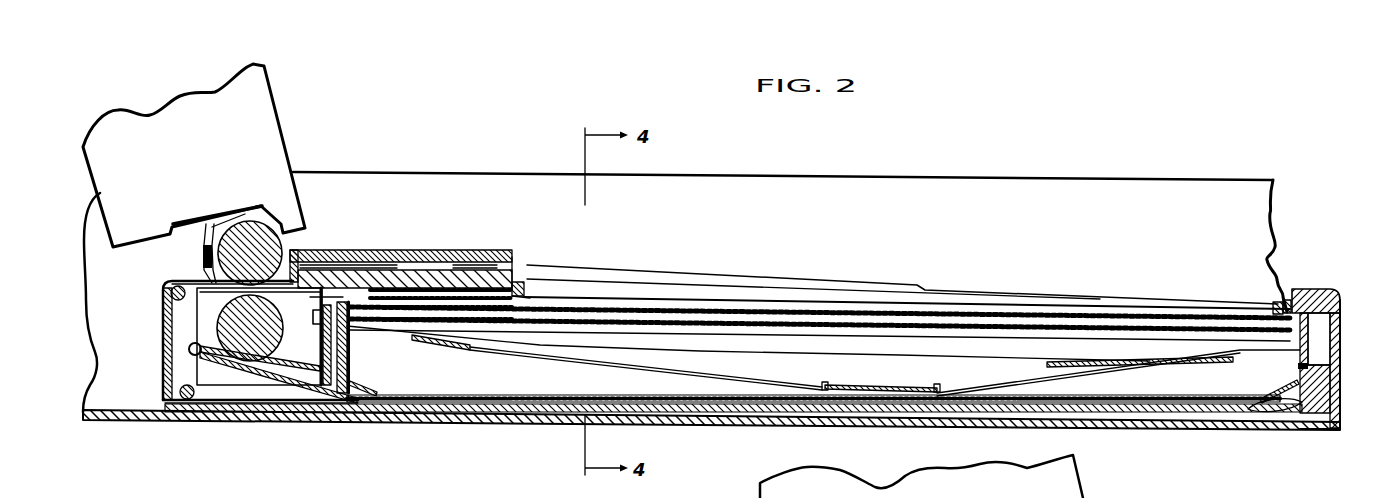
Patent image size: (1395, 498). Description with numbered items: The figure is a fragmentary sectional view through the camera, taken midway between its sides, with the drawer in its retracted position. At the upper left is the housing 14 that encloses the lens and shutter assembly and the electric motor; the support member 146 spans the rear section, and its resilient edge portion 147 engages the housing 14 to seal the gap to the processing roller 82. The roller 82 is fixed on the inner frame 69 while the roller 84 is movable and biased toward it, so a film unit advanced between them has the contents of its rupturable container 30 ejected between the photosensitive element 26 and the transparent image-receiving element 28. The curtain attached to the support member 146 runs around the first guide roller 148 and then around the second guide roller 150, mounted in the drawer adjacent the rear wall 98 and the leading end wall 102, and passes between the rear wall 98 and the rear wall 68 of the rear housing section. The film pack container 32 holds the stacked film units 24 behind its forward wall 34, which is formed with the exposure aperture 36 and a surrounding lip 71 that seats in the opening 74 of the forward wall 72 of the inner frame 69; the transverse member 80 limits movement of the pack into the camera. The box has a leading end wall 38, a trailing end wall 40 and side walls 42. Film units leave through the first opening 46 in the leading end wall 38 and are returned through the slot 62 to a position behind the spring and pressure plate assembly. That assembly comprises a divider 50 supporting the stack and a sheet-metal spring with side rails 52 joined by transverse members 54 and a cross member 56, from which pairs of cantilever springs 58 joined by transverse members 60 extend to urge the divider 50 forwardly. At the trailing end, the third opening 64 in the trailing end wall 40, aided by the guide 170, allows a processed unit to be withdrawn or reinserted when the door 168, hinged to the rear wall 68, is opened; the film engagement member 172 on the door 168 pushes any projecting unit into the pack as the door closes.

The housing 14 is at (292, 158).
The support member 146 is at (206, 220).
The resilient edge portion 147 is at (216, 222).
The processing roller 82 is at (260, 234).
The first guide roller 148 is at (170, 282).
The processing roller 84 is at (227, 318).
The leading end wall 102 is at (165, 372).
The second guide roller 150 is at (189, 400).
The first opening 46 is at (310, 297).
The transverse member 80 is at (320, 336).
The slot 62 is at (327, 396).
The leading end wall 38 is at (348, 360).
The transverse members 54 is at (378, 388).
The side rails 52 is at (417, 394).
The side walls 42 is at (508, 381).
The transverse members 60 is at (438, 348).
The rear wall 98 is at (414, 413).
The rear wall 68 is at (450, 424).
The forward wall 72 is at (380, 257).
The forward wall 34 is at (421, 286).
The rupturable container 30 is at (461, 287).
The exposure aperture 36 is at (520, 281).
The lip 71 is at (514, 306).
The opening 74 is at (1287, 297).
The film units 24 is at (588, 299).
The image-receiving element 28 is at (655, 318).
The photosensitive element 26 is at (690, 325).
The inner frame 69 is at (938, 282).
The divider 50 is at (848, 345).
The cross member 56 is at (871, 385).
The cantilever springs 58 is at (612, 366).
The container 32 is at (1318, 332).
The trailing end wall 40 is at (1306, 354).
The guide 170 is at (1299, 366).
The third opening 64 is at (1313, 381).
The film engagement member 172 is at (1328, 400).
The door 168 is at (1317, 430).